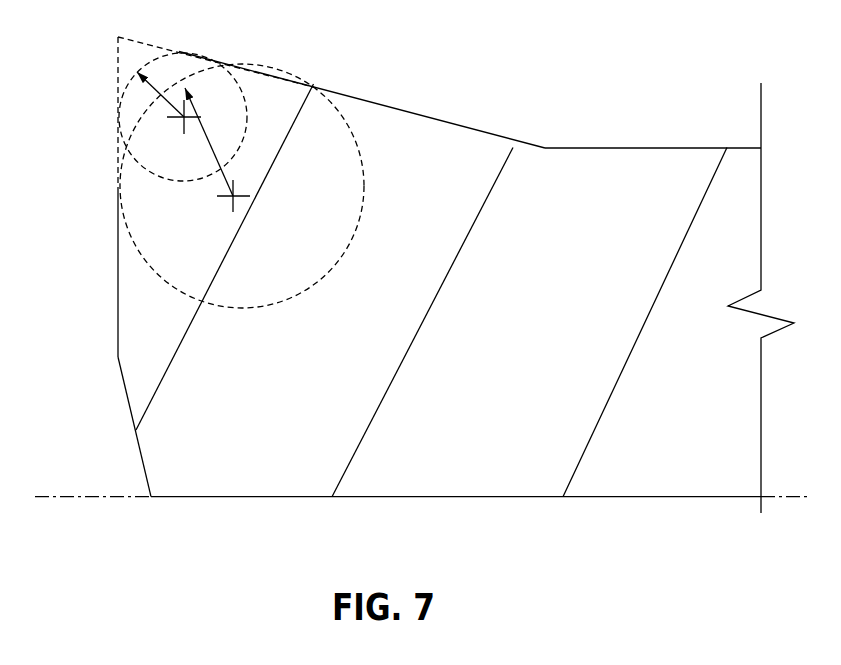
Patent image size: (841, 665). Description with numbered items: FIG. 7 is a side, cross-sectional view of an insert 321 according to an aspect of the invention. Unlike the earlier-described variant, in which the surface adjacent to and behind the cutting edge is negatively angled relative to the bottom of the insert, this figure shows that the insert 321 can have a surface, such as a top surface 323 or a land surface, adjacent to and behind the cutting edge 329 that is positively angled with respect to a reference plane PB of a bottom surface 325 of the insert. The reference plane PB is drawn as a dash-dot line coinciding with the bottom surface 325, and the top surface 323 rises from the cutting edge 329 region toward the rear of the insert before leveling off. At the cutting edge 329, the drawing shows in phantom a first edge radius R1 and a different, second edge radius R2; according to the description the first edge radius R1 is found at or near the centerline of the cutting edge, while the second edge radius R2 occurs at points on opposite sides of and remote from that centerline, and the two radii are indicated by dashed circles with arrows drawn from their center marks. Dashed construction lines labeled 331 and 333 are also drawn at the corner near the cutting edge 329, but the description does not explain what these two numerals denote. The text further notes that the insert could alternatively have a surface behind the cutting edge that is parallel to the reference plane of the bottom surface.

The insert 321 is at (405, 302).
The top surface 323 is at (680, 147).
The bottom surface 325 is at (232, 498).
The cutting edge 329 is at (165, 110).
The original side edge (dashed) 331 is at (118, 145).
The original top edge (dashed) 333 is at (118, 62).
The reference plane PB is at (102, 495).
The first edge radius R1 is at (203, 132).
The second edge radius R2 is at (150, 85).